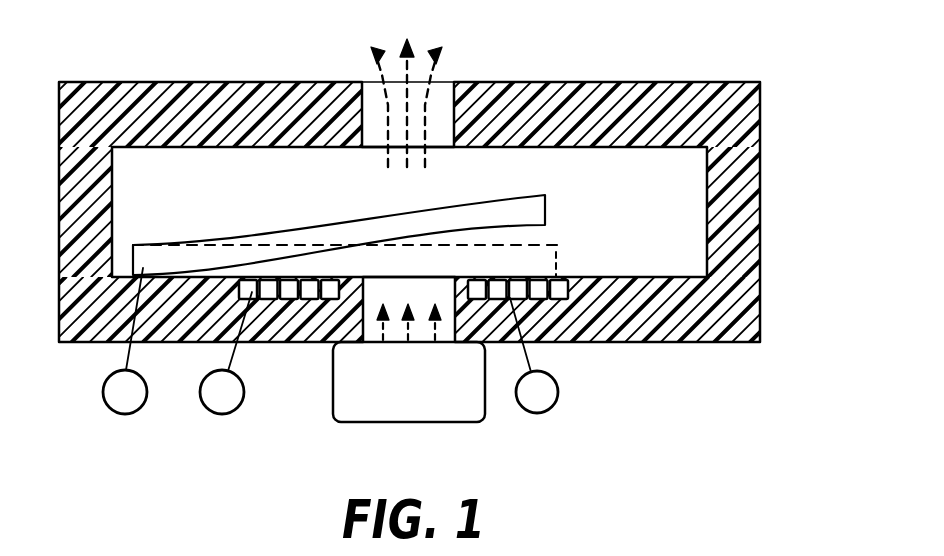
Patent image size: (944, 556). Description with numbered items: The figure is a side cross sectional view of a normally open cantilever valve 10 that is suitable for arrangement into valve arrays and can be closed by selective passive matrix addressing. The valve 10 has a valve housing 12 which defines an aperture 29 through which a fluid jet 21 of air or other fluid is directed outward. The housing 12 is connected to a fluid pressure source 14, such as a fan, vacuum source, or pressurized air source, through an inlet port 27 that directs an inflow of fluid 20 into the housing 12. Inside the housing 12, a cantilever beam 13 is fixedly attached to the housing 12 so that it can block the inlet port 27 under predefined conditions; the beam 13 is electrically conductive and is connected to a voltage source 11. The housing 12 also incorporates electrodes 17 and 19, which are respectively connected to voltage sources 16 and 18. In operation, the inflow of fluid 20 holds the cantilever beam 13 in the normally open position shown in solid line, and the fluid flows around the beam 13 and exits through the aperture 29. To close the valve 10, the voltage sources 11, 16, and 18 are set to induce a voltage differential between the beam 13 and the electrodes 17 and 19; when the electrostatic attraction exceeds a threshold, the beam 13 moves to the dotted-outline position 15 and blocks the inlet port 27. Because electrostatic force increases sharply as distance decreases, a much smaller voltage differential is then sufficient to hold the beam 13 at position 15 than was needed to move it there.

The normally open cantilever valve 10 is at (704, 39).
The voltage source 11 is at (125, 402).
The valve housing 12 is at (752, 135).
The cantilever beam 13 is at (543, 210).
The fluid pressure source 14 is at (409, 382).
The closed position 15 is at (540, 256).
The voltage source 16 is at (222, 402).
The electrode 17 is at (281, 300).
The voltage source 18 is at (542, 403).
The electrode 19 is at (552, 292).
The inflow of fluid 20 is at (383, 322).
The fluid jet 21 is at (388, 96).
The inlet port 27 is at (435, 322).
The aperture 29 is at (453, 110).